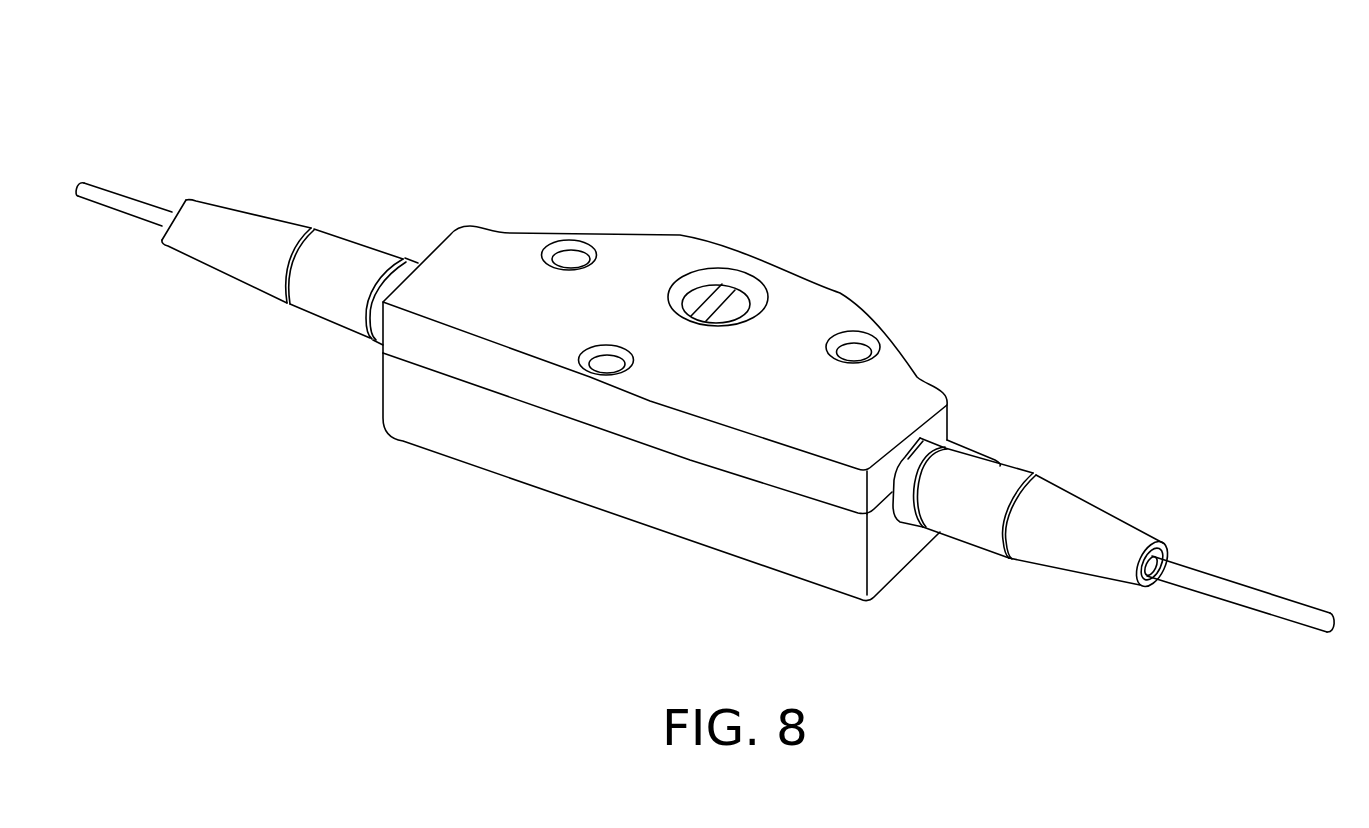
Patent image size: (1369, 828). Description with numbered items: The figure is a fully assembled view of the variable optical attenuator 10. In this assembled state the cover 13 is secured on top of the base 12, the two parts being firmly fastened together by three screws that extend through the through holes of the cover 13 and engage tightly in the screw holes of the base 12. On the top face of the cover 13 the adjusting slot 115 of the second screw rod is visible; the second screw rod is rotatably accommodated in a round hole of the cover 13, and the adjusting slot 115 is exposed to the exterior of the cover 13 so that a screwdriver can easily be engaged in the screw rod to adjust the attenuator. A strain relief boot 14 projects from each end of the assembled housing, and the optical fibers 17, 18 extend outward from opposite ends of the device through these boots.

The variable optical attenuator 10 is at (1211, 105).
The base 12 is at (665, 510).
The cover 13 is at (799, 308).
The adjusting slot 115 is at (700, 300).
The strain relief boot 14 is at (1107, 500).
The optical fiber 17 is at (118, 207).
The optical fiber 18 is at (1230, 590).